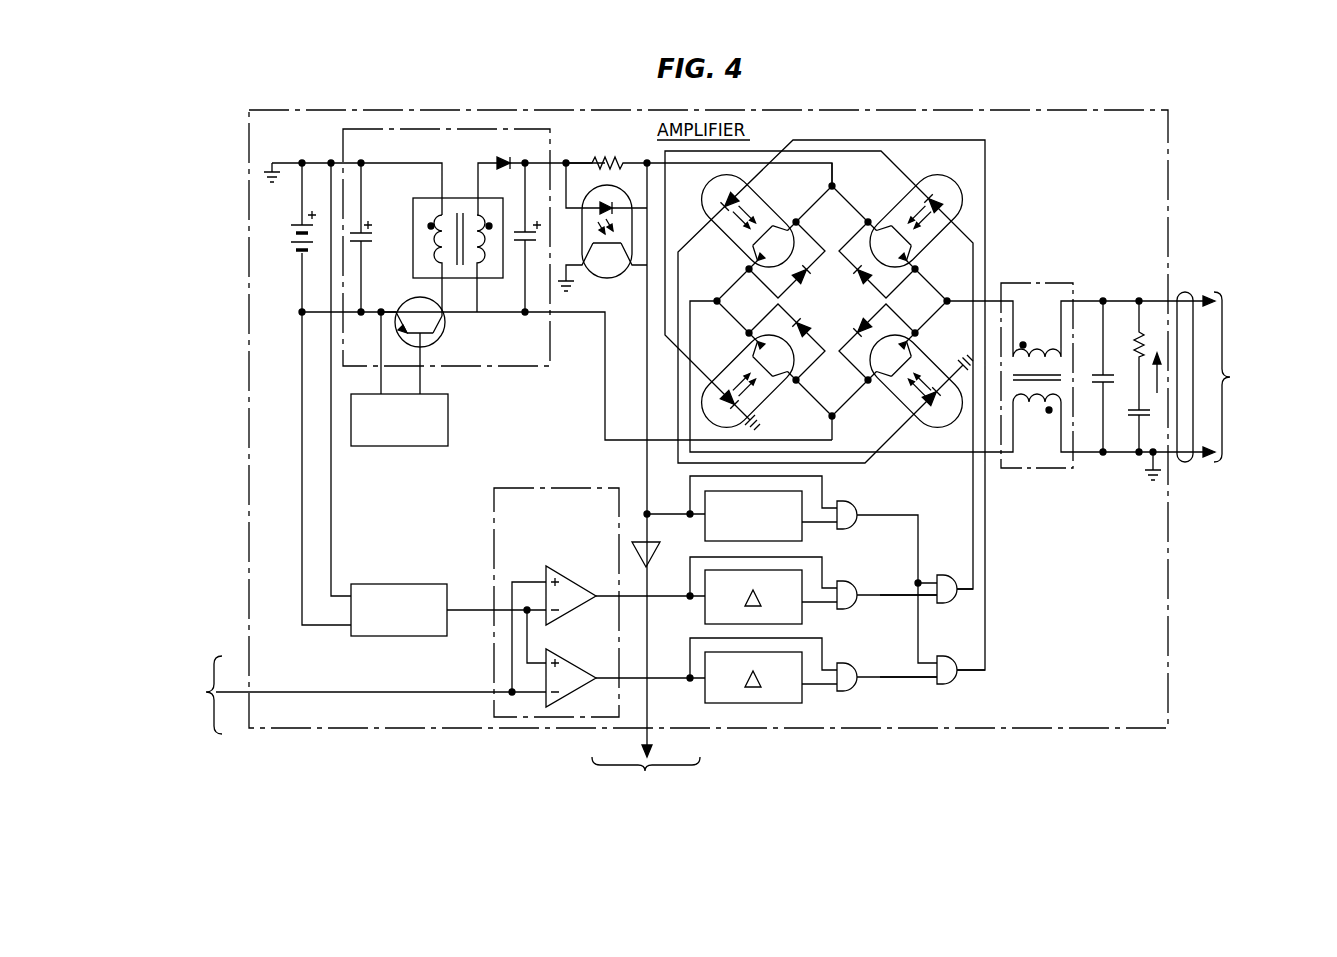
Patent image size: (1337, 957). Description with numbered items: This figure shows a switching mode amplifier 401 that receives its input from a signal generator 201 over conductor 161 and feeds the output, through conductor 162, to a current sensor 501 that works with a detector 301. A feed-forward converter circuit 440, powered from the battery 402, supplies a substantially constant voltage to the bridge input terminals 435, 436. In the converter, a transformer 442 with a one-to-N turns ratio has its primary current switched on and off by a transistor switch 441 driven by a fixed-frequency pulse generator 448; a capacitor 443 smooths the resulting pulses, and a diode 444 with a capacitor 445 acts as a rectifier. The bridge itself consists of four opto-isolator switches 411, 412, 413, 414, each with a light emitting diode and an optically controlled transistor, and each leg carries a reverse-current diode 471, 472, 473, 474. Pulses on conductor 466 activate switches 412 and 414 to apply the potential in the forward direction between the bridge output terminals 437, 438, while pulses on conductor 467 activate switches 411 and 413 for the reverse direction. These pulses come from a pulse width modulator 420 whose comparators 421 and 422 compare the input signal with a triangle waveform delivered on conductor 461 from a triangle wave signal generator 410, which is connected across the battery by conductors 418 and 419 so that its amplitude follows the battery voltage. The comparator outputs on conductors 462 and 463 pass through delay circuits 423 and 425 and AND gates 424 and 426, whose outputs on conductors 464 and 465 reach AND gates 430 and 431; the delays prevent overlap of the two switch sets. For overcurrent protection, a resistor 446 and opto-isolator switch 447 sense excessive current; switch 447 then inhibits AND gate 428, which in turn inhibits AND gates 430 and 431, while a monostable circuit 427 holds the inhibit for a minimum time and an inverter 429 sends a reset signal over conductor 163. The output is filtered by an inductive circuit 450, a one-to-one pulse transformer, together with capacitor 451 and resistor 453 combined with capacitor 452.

The amplifier 401 is at (704, 110).
The battery 402 is at (290, 254).
The triangle wave signal generator 410 is at (410, 584).
The opto-isolator switch 411 is at (715, 186).
The opto-isolator switch 412 is at (942, 186).
The opto-isolator switch 413 is at (940, 354).
The opto-isolator switch 414 is at (728, 362).
The conductor 418 is at (331, 515).
The conductor 419 is at (300, 515).
The pulse width modulator 420 is at (561, 488).
The operational amplifier (comparator) 421 is at (565, 582).
The operational amplifier (comparator) 422 is at (565, 667).
The delay circuit 423 is at (802, 620).
The AND gate 424 is at (852, 578).
The delay circuit 425 is at (802, 700).
The AND gate 426 is at (852, 664).
The monostable circuit 427 is at (802, 538).
The AND gate 428 is at (848, 501).
The inverter 429 is at (662, 532).
The AND gate 430 is at (952, 564).
The AND gate 431 is at (950, 650).
The bridge input terminal 435 is at (838, 188).
The bridge input terminal 436 is at (836, 418).
The bridge output terminal 437 is at (714, 298).
The bridge output terminal 438 is at (951, 298).
The feed-forward converter circuit 440 is at (537, 366).
The transistor switch 441 is at (445, 330).
The transformer 442 is at (421, 196).
The capacitor 443 is at (372, 243).
The diode 444 is at (502, 161).
The capacitor 445 is at (524, 230).
The resistor 446 is at (614, 156).
The opto-isolator switch 447 is at (612, 280).
The pulse generator 448 is at (448, 421).
The inductive circuit 450 is at (1047, 283).
The capacitor 451 is at (1090, 380).
The capacitor 452 is at (1134, 420).
The resistor 453 is at (1130, 340).
The conductor 461 is at (464, 606).
The conductor 462 is at (672, 598).
The conductor 463 is at (672, 680).
The conductor 464 is at (906, 585).
The conductor 465 is at (906, 672).
The conductor 466 is at (970, 485).
The conductor 467 is at (985, 487).
The diode 471 is at (808, 268).
The diode 472 is at (860, 282).
The diode 473 is at (858, 328).
The diode 474 is at (816, 344).
The conductor 161 is at (232, 690).
The conductor 162 is at (1185, 292).
The conductor 163 is at (650, 742).
The signal generator 201 is at (181, 695).
The detector 301 is at (646, 800).
The current sensor 501 is at (1263, 377).